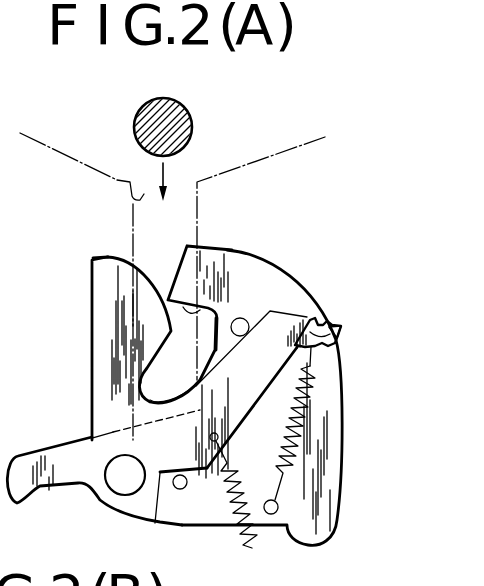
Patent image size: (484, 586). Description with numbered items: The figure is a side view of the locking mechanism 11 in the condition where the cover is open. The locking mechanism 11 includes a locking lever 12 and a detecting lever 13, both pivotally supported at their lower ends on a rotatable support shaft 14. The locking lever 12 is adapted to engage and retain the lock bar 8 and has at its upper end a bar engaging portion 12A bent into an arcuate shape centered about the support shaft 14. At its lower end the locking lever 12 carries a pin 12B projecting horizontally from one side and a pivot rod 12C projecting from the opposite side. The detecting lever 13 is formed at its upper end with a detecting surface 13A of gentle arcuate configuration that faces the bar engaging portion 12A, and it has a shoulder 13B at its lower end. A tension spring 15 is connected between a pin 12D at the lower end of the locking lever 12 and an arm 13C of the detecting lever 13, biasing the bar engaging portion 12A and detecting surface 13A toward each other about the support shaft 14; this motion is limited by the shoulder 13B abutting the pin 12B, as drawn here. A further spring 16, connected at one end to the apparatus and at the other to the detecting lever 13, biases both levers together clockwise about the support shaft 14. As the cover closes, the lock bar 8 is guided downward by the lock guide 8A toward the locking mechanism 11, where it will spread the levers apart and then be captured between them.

The lock bar 8 is at (182, 107).
The lock guide 8A is at (145, 184).
The locking mechanism 11 is at (207, 387).
The locking lever 12 is at (282, 398).
The bar engaging portion 12A is at (226, 250).
The pin 12B is at (183, 490).
The pivot rod 12C is at (248, 318).
The pin 12D is at (278, 511).
The detecting lever 13 is at (117, 382).
The detecting surface 13A is at (108, 256).
The shoulder 13B is at (160, 478).
The arm 13C is at (323, 313).
The support shaft 14 is at (117, 481).
The tension spring 15 is at (313, 392).
The spring 16 is at (258, 556).